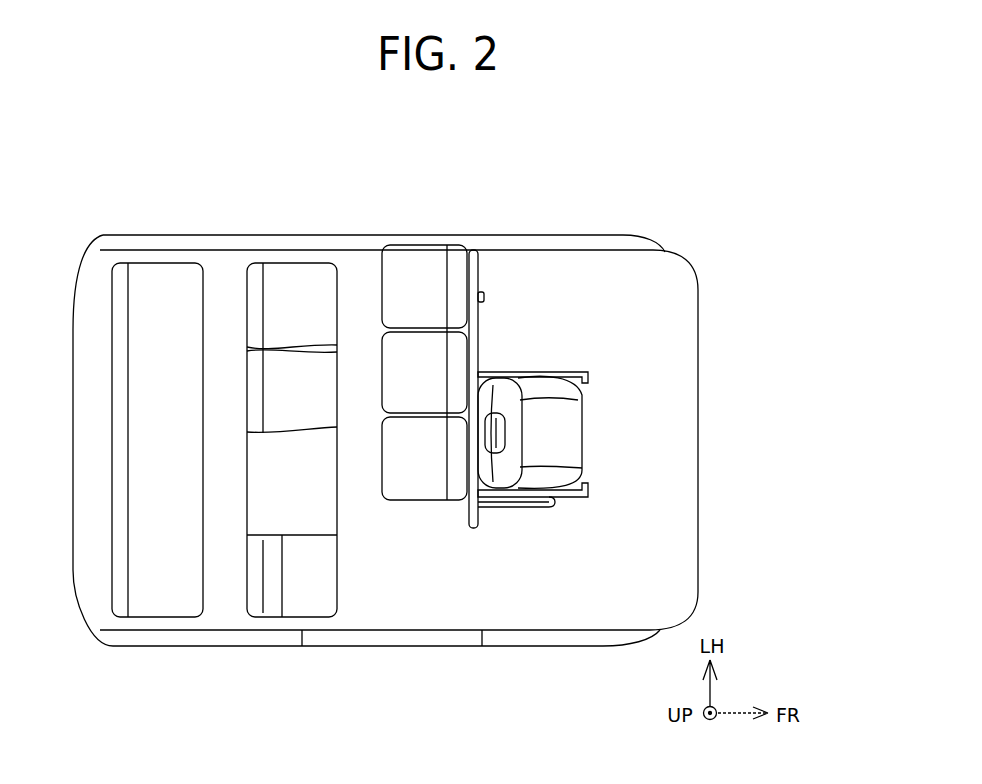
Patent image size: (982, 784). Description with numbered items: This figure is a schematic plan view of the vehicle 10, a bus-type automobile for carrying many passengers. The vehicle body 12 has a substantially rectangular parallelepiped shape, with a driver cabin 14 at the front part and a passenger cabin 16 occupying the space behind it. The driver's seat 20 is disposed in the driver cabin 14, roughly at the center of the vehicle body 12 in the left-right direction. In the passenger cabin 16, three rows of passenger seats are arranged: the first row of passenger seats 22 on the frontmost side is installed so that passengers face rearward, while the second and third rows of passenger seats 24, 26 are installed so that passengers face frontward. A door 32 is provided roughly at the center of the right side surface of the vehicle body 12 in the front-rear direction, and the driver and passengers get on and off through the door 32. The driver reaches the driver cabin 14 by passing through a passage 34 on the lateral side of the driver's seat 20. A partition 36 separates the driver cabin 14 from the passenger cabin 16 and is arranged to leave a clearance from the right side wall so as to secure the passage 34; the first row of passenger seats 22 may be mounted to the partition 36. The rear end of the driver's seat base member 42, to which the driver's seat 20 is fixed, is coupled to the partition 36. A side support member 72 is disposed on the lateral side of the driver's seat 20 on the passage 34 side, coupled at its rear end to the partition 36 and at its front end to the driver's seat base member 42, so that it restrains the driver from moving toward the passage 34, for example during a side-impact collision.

The vehicle 10 is at (137, 188).
The vehicle body 12 is at (538, 233).
The driver cabin 14 is at (574, 308).
The passenger cabin 16 is at (344, 296).
The driver's seat 20 is at (558, 433).
The first row of passenger seats 22 is at (418, 270).
The second row of passenger seats 24 is at (292, 278).
The third row of passenger seats 26 is at (160, 283).
The door 32 is at (390, 636).
The passage 34 is at (467, 569).
The partition 36 is at (484, 294).
The driver's seat base member 42 is at (573, 370).
The side support member 72 is at (540, 507).